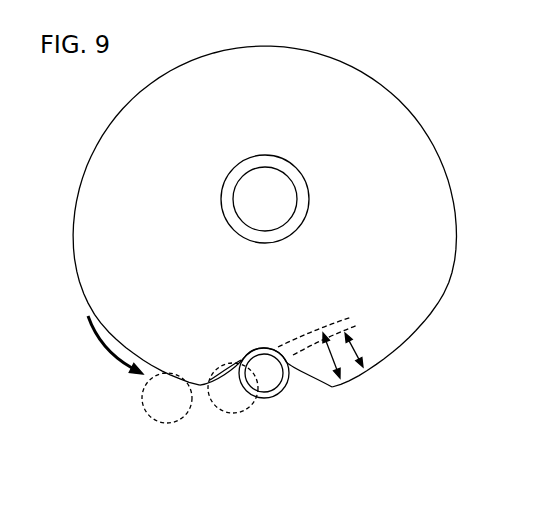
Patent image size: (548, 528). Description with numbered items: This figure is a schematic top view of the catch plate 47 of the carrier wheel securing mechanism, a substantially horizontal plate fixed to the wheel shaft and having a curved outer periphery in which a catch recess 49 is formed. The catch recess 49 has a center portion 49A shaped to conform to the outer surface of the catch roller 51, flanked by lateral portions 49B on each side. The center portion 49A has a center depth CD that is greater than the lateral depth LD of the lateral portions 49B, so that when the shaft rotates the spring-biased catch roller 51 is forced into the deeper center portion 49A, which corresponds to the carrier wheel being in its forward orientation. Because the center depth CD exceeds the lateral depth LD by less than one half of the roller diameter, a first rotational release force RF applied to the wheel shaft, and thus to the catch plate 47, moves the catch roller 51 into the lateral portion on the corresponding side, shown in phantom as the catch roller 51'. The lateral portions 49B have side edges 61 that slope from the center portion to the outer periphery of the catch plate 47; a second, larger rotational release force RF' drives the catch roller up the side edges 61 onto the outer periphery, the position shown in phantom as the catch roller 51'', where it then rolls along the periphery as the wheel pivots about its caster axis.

The catch plate 47 is at (425, 313).
The catch recess 49 is at (252, 379).
The center portion 49A is at (264, 347).
The lateral portions 49B is at (240, 357).
The catch roller 51 is at (278, 388).
The catch roller (in lateral portion) 51' is at (222, 409).
The catch roller (on outer periphery) 51'' is at (146, 412).
The side edges 61 is at (207, 380).
The lateral depth LD is at (355, 352).
The center depth CD is at (327, 365).
The rotational release force RF is at (110, 345).